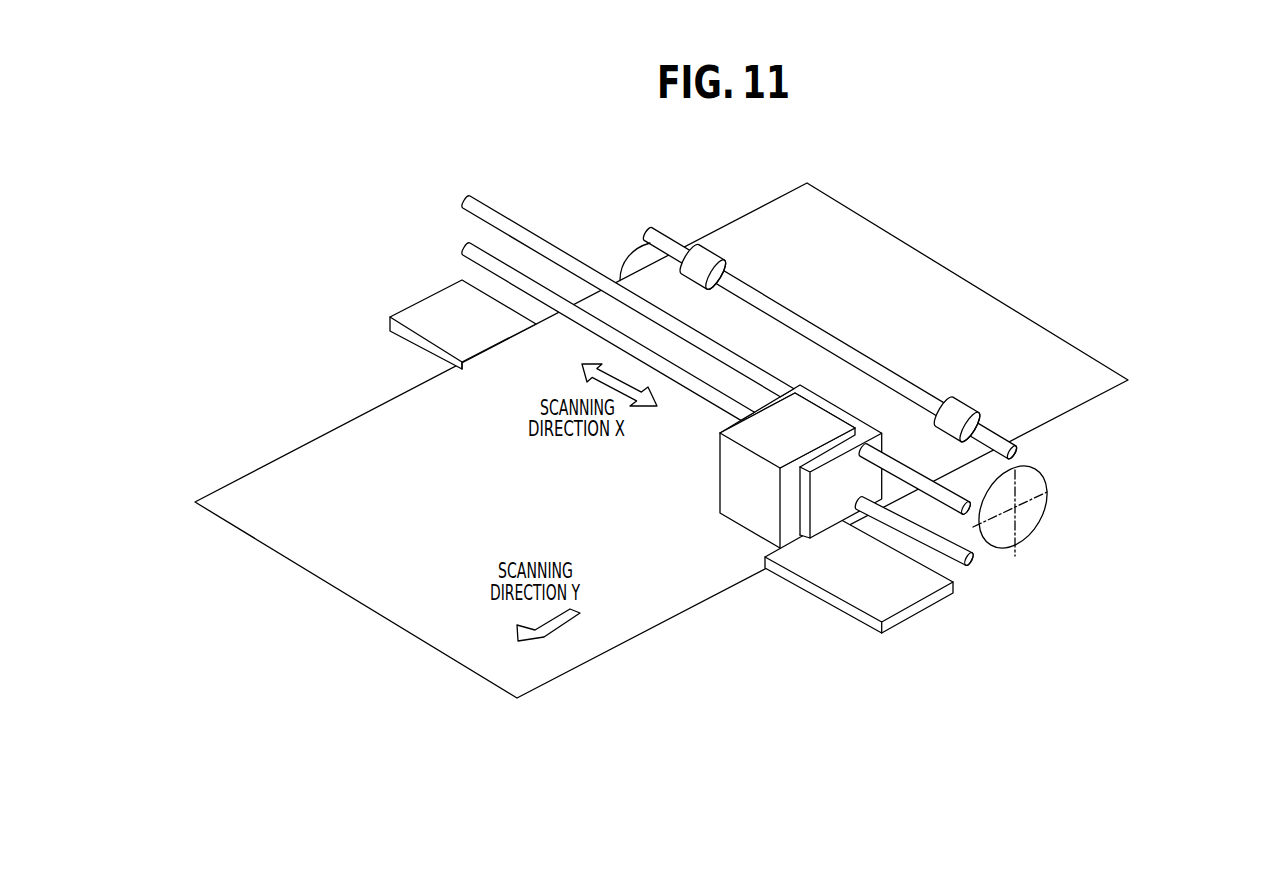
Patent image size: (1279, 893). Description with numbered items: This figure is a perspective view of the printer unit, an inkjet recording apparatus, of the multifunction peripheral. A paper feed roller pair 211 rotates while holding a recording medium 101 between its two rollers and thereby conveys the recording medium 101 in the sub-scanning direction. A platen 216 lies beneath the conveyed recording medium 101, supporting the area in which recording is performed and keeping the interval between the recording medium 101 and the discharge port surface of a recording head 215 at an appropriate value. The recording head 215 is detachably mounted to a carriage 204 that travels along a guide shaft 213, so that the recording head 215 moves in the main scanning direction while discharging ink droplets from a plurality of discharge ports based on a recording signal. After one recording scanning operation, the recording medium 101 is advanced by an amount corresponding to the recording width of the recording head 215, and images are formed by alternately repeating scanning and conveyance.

The recording medium 101 is at (880, 267).
The paper feed roller pair 211 is at (1022, 456).
The guide shaft 213 is at (1015, 510).
The platen 216 is at (912, 589).
The recording head 215 is at (750, 517).
The carriage 204 is at (830, 505).